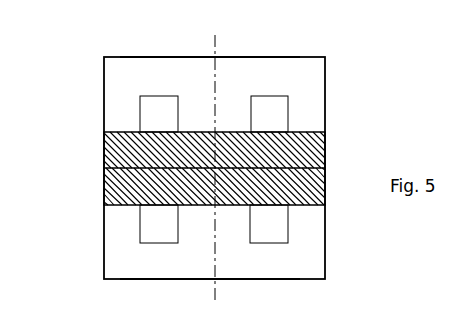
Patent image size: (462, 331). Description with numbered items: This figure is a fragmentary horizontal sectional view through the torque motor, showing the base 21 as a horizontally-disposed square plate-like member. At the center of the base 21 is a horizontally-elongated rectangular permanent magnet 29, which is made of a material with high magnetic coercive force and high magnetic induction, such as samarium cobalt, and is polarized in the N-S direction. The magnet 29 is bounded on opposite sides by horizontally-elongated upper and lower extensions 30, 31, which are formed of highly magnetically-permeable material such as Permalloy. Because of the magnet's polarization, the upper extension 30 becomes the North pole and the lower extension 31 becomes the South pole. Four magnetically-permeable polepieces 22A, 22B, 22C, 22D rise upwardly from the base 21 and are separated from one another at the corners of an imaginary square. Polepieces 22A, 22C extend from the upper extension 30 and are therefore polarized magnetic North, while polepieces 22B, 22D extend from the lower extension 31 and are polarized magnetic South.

The base 21 is at (332, 53).
The polepiece A 22A is at (138, 113).
The polepiece B 22B is at (138, 224).
The polepiece C 22C is at (290, 108).
The polepiece D 22D is at (290, 225).
The permanent magnet 29 is at (314, 147).
The upper extension 30 is at (178, 59).
The lower extension 31 is at (197, 268).